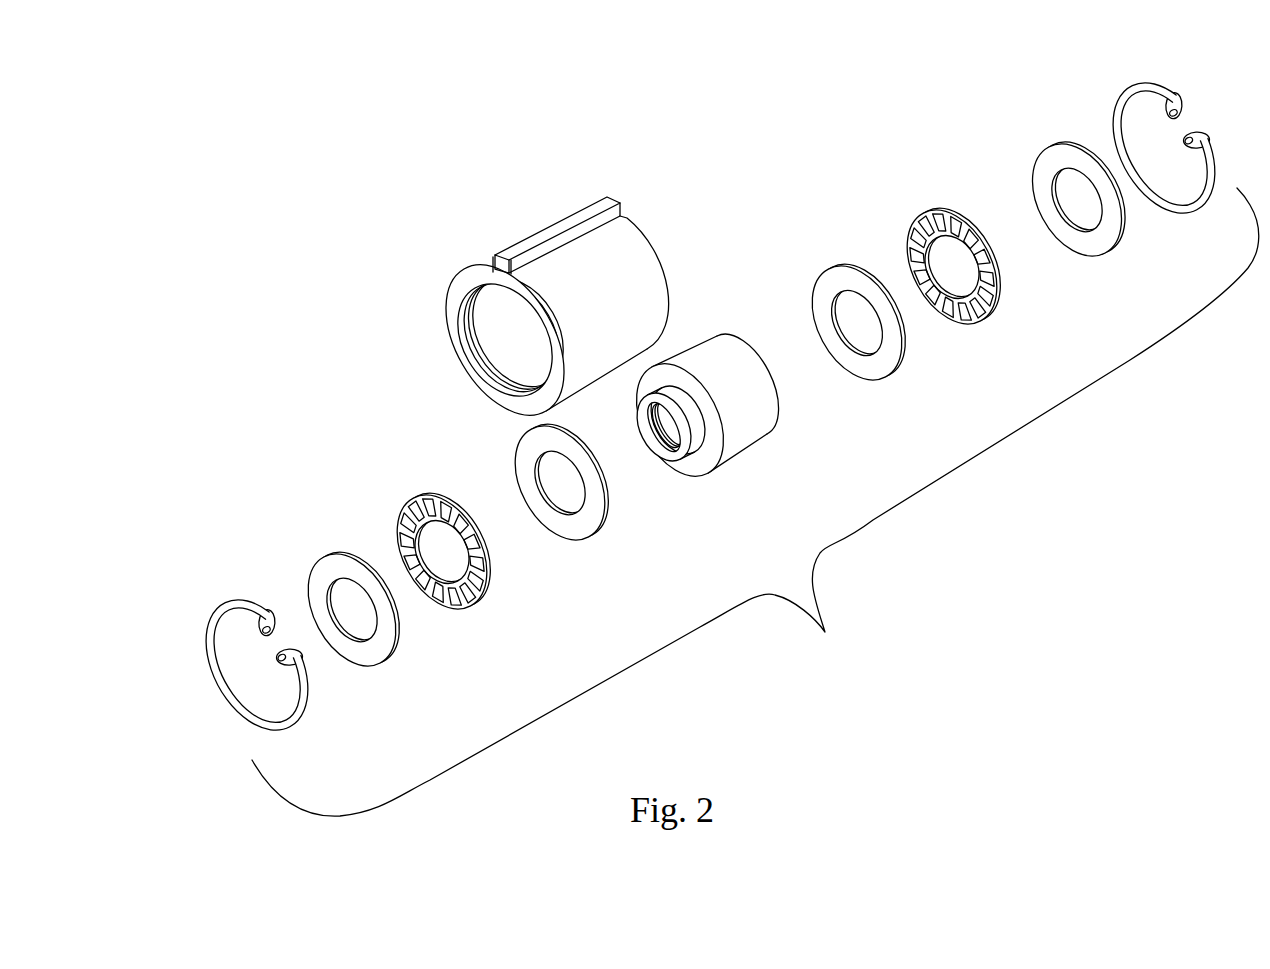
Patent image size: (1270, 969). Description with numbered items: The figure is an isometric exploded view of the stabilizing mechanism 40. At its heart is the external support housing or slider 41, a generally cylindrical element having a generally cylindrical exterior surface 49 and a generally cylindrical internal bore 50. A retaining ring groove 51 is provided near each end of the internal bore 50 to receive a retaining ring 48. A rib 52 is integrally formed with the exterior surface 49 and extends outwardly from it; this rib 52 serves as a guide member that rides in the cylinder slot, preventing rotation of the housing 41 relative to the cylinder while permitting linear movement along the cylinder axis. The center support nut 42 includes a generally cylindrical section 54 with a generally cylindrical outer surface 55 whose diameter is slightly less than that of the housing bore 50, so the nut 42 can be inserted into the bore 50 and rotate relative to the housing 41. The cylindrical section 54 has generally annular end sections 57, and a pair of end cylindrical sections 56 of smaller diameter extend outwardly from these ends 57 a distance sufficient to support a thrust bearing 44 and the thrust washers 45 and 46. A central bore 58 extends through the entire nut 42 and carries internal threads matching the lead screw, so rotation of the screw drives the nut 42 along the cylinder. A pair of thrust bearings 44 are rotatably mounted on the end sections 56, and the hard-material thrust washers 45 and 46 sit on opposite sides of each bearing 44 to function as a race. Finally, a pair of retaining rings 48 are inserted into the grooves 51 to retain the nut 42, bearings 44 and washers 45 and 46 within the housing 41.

The stabilizing mechanism 40 is at (755, 502).
The external support housing or slider 41 is at (488, 251).
The center support nut 42 is at (737, 409).
The thrust bearing 44 is at (412, 498).
The thrust washer 45 is at (571, 545).
The thrust washer 46 is at (330, 556).
The retaining ring 48 is at (222, 606).
The cylindrical exterior surface 49 is at (535, 283).
The internal bore 50 is at (506, 372).
The retaining ring groove 51 is at (470, 338).
The rib 52 is at (599, 200).
The cylindrical section 54 is at (720, 462).
The cylindrical outer surface 55 is at (754, 427).
The end cylindrical section 56 is at (778, 380).
The annular end section 57 is at (705, 470).
The central bore 58 is at (655, 457).